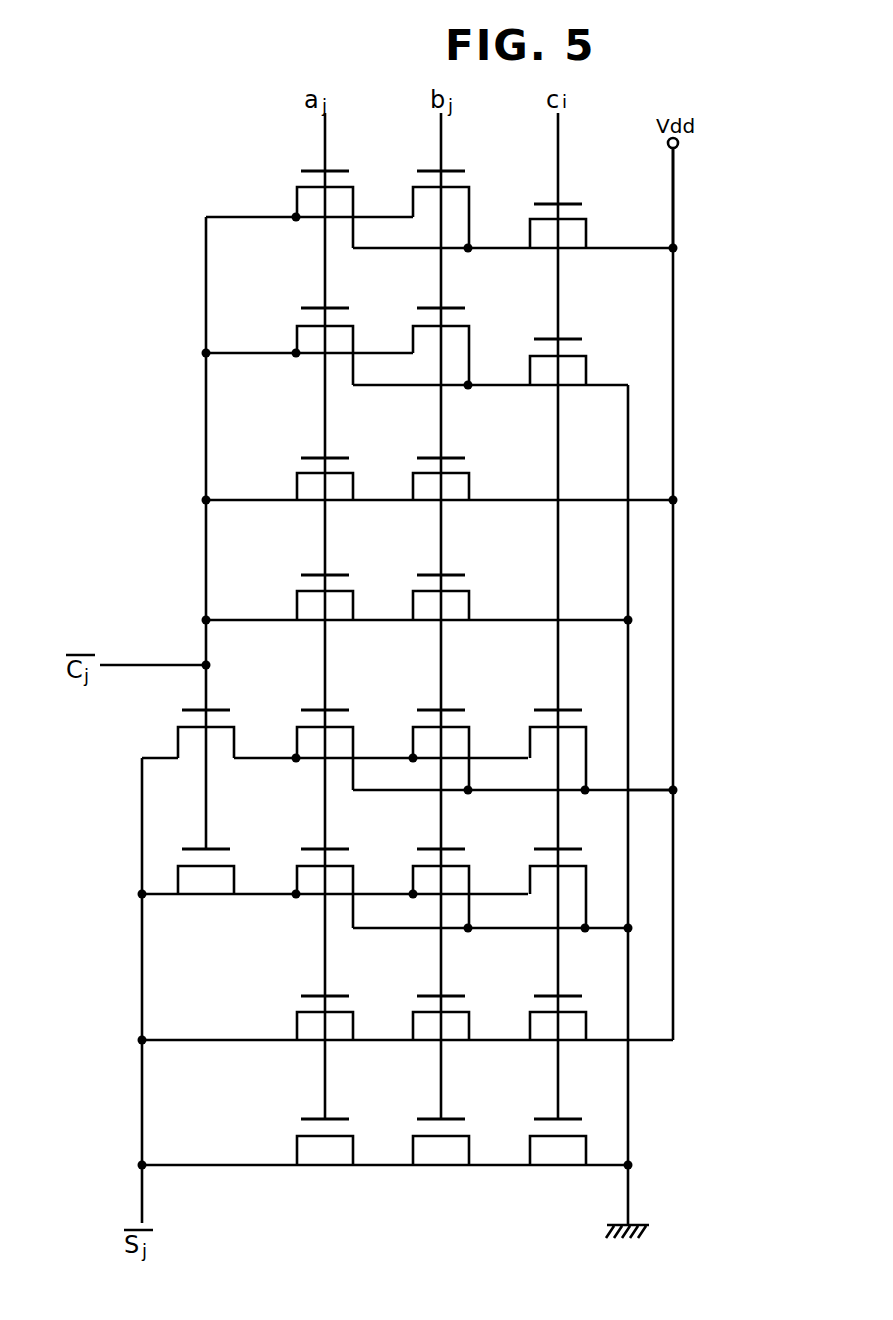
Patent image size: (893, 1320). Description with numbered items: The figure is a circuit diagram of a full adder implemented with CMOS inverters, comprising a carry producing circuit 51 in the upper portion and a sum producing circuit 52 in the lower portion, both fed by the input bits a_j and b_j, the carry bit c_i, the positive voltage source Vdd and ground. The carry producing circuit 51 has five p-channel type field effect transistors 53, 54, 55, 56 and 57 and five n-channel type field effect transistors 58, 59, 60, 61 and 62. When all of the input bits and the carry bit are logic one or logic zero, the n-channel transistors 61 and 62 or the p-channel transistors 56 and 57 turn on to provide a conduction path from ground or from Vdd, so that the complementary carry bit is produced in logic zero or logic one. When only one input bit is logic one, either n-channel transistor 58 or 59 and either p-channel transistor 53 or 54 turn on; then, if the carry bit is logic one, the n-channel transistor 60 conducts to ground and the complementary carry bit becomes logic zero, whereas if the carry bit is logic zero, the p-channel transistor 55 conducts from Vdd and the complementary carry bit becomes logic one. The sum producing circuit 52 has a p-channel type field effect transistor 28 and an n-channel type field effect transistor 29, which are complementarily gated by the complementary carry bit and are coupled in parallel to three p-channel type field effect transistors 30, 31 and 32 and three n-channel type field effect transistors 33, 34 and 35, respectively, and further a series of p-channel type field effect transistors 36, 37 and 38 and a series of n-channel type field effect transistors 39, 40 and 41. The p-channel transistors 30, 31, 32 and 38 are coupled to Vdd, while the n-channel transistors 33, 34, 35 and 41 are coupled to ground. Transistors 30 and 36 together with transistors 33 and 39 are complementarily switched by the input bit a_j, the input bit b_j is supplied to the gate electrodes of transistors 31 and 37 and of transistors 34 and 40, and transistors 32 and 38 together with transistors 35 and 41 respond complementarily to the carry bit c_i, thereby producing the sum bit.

The p-channel type field effect transistor 28 is at (214, 710).
The n-channel type field effect transistor 29 is at (214, 849).
The p-channel type field effect transistor 30 is at (333, 710).
The p-channel type field effect transistor 31 is at (449, 710).
The p-channel type field effect transistor 32 is at (566, 710).
The n-channel type field effect transistor 33 is at (333, 849).
The n-channel type field effect transistor 34 is at (449, 849).
The n-channel type field effect transistor 35 is at (566, 849).
The p-channel type field effect transistor 36 is at (333, 996).
The p-channel type field effect transistor 37 is at (449, 996).
The p-channel type field effect transistor 38 is at (566, 996).
The n-channel type field effect transistor 39 is at (333, 1119).
The n-channel type field effect transistor 40 is at (449, 1119).
The n-channel type field effect transistor 41 is at (566, 1119).
The carry producing circuit 51 is at (699, 201).
The sum producing circuit 52 is at (691, 799).
The p-channel type field effect transistor 53 is at (333, 171).
The p-channel type field effect transistor 54 is at (449, 171).
The p-channel type field effect transistor 55 is at (566, 204).
The p-channel type field effect transistor 56 is at (333, 458).
The p-channel type field effect transistor 57 is at (449, 458).
The n-channel type field effect transistor 58 is at (333, 308).
The n-channel type field effect transistor 59 is at (449, 308).
The n-channel type field effect transistor 60 is at (566, 339).
The n-channel type field effect transistor 61 is at (333, 575).
The n-channel type field effect transistor 62 is at (449, 575).